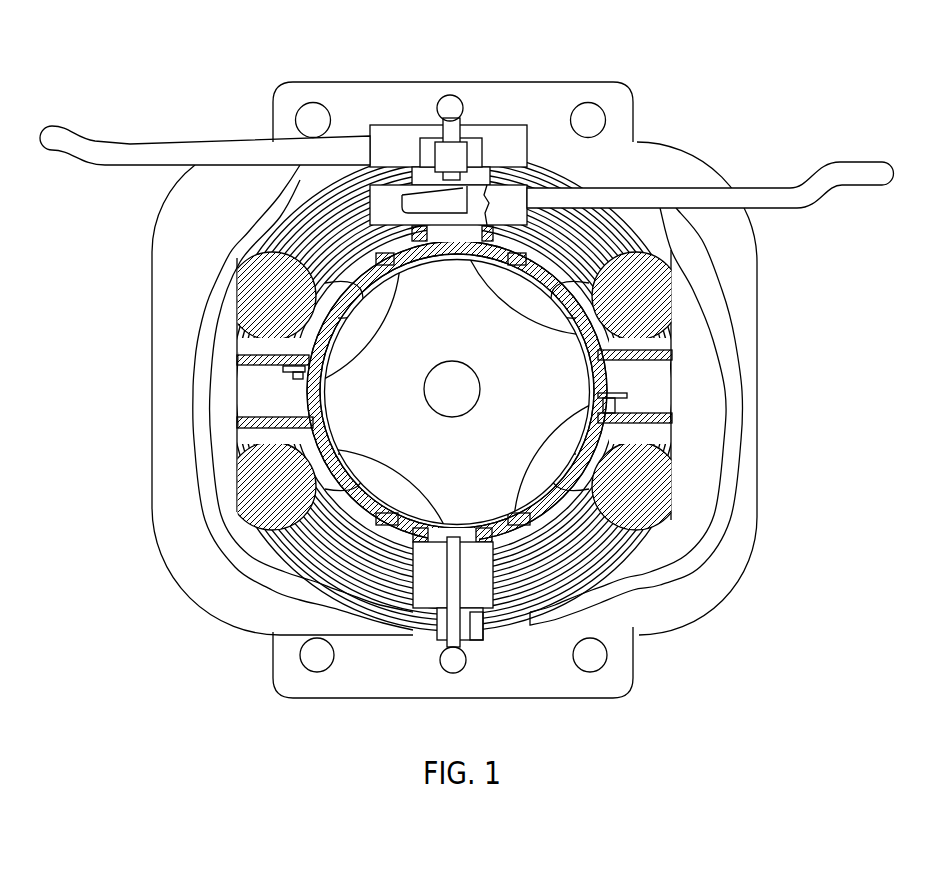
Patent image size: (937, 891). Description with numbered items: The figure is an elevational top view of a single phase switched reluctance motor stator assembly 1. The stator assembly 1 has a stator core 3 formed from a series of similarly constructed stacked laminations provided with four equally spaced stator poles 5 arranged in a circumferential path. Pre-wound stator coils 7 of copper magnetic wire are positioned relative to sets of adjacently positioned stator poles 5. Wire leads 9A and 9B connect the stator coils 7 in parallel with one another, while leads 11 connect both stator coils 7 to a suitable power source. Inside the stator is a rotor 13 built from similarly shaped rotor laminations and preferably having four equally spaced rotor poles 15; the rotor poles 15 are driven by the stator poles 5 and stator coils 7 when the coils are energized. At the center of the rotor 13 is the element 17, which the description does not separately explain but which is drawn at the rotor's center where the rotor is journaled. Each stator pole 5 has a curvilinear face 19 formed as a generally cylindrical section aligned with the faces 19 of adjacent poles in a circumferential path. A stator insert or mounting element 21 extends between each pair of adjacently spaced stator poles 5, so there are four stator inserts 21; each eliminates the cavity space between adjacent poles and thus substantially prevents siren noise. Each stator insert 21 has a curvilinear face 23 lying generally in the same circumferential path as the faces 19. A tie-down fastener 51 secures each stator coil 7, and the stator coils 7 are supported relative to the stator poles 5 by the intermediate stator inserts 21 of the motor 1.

The switched reluctance motor stator assembly 1 is at (75, 392).
The stator core 3 is at (663, 180).
The stator poles 5 is at (305, 268).
The stator coils 7 is at (583, 243).
The wire lead 9A is at (727, 350).
The wire lead 9B is at (250, 535).
The leads 11 is at (130, 142).
The rotor 13 is at (578, 392).
The rotor poles 15 is at (457, 494).
The shaft 17 is at (439, 403).
The curvilinear face 19 is at (362, 288).
The stator insert 21 is at (280, 358).
The curvilinear face 23 is at (453, 423).
The tie-down fastener 51 is at (449, 160).